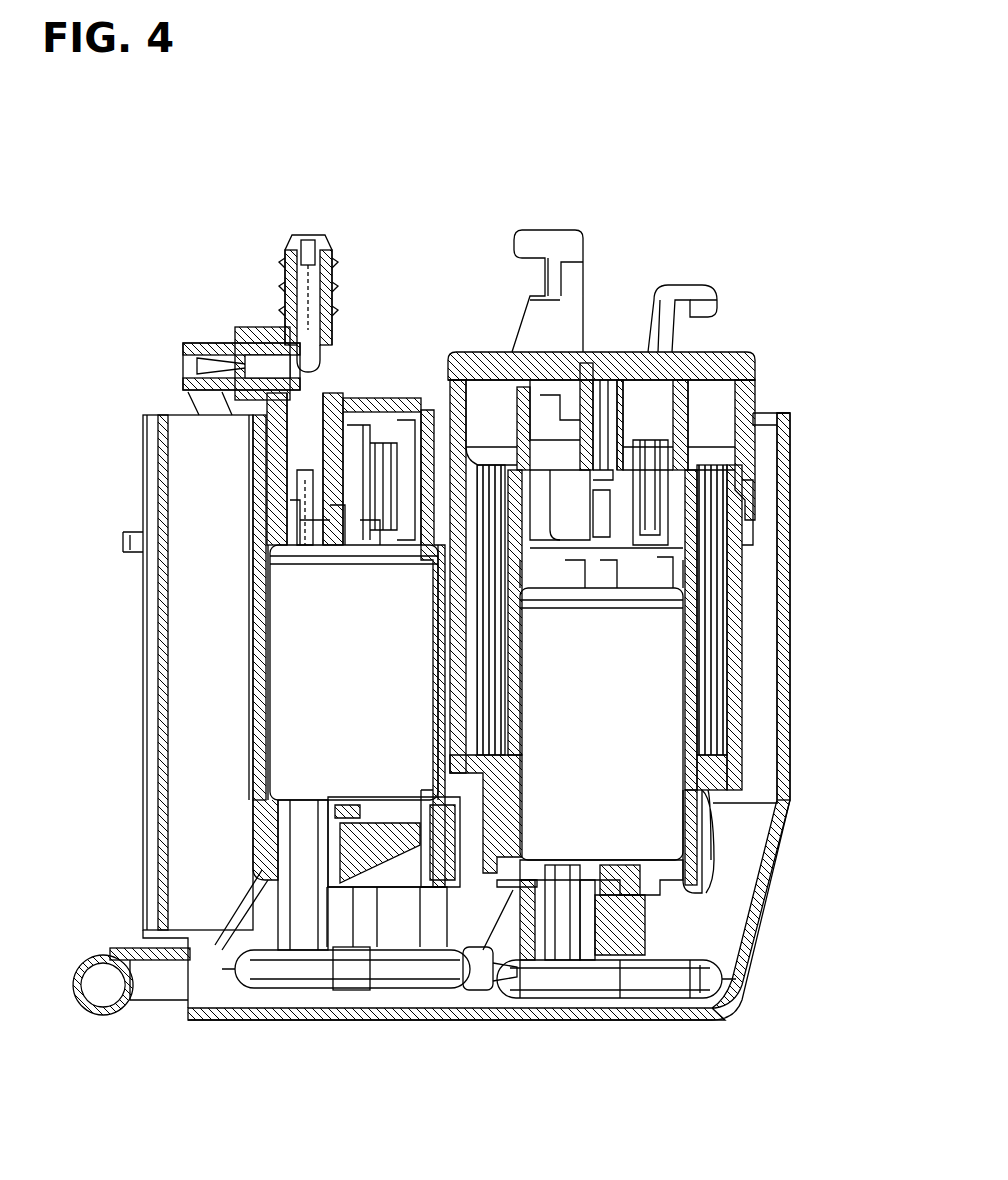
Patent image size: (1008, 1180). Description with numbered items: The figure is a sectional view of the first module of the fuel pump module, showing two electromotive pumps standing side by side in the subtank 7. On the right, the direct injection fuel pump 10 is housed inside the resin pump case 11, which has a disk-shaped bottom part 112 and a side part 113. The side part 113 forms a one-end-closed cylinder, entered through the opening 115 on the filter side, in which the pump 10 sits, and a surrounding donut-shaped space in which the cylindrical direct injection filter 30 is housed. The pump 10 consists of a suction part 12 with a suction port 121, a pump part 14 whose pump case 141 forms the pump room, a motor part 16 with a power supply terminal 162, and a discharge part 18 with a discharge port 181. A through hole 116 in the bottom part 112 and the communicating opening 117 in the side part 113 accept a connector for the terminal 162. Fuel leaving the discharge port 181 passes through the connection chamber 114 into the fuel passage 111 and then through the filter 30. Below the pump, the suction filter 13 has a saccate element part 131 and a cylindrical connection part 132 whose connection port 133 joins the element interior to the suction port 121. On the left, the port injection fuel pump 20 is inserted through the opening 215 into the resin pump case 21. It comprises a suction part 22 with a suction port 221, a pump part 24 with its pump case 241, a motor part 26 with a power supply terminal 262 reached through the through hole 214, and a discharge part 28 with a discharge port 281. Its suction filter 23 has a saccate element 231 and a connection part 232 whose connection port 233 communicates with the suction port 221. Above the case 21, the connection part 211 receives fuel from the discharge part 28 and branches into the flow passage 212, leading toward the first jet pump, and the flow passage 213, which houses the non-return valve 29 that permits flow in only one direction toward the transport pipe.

The subtank 7 is at (772, 900).
The direct injection fuel pump 10 is at (725, 615).
The pump case 11 is at (745, 352).
The suction part 12 is at (620, 900).
The suction filter 13 is at (650, 1002).
The pump part 14 is at (705, 840).
The motor part 16 is at (645, 652).
The discharge part 18 is at (600, 512).
The port injection fuel pump 20 is at (252, 567).
The pump case 21 is at (255, 512).
The suction part 22 is at (258, 840).
The suction filter 23 is at (393, 992).
The pump part 24 is at (262, 778).
The motor part 26 is at (295, 640).
The discharge part 28 is at (305, 445).
The non-return valve 29 is at (332, 262).
The direct injection filter 30 is at (735, 690).
The fuel passage 111 is at (478, 392).
The bottom part 112 is at (752, 360).
The side part 113 is at (735, 720).
The connection chamber 114 is at (566, 258).
The opening 115 is at (692, 862).
The through hole 116 is at (600, 365).
The opening 117 is at (655, 318).
The suction port 121 is at (560, 875).
The element part 131 is at (700, 988).
The connection part 132 is at (612, 933).
The connection port 133 is at (590, 932).
The pump case 141 is at (640, 787).
The power supply terminal 162 is at (785, 560).
The discharge port 181 is at (562, 520).
The connection part 211 is at (232, 330).
The flow passage 212 is at (178, 345).
The flow passage 213 is at (292, 240).
The through hole 214 is at (365, 398).
The opening 215 is at (262, 882).
The suction port 221 is at (300, 812).
The element 231 is at (432, 972).
The connection part 232 is at (355, 945).
The connection port 233 is at (318, 915).
The pump case 241 is at (290, 735).
The power supply terminal 262 is at (404, 540).
The discharge port 281 is at (310, 520).